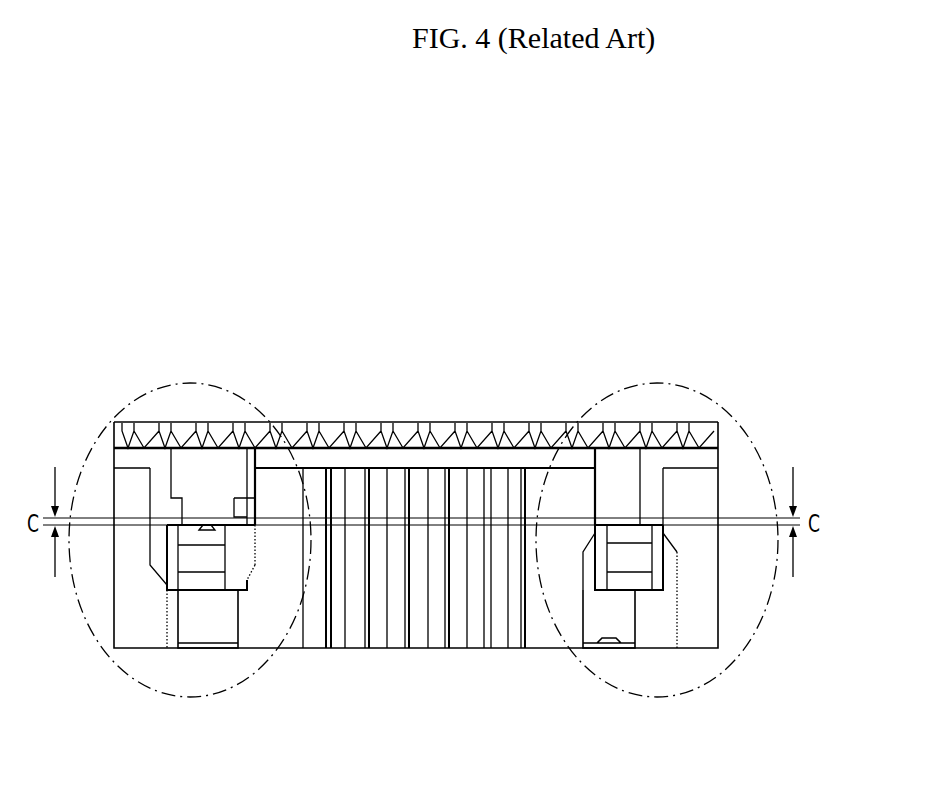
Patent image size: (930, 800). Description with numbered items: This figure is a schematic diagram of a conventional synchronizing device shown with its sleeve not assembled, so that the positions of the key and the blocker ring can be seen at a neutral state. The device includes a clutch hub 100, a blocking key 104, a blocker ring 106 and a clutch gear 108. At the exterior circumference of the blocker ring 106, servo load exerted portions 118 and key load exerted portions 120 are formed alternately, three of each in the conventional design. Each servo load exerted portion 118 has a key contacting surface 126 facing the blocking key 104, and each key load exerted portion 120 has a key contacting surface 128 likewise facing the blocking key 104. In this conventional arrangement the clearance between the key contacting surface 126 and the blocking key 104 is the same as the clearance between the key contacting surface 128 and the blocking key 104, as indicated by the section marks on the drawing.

The clutch hub 100 is at (402, 640).
The blocking key 104 is at (188, 558).
The blocker ring 106 is at (355, 458).
The clutch gear 108 is at (405, 428).
The servo load exerted portion 118 is at (228, 392).
The key load exerted portion 120 is at (688, 392).
The key contacting surface of the servo load exerted portion 126 is at (192, 548).
The key contacting surface of the key load exerted portion 128 is at (626, 548).